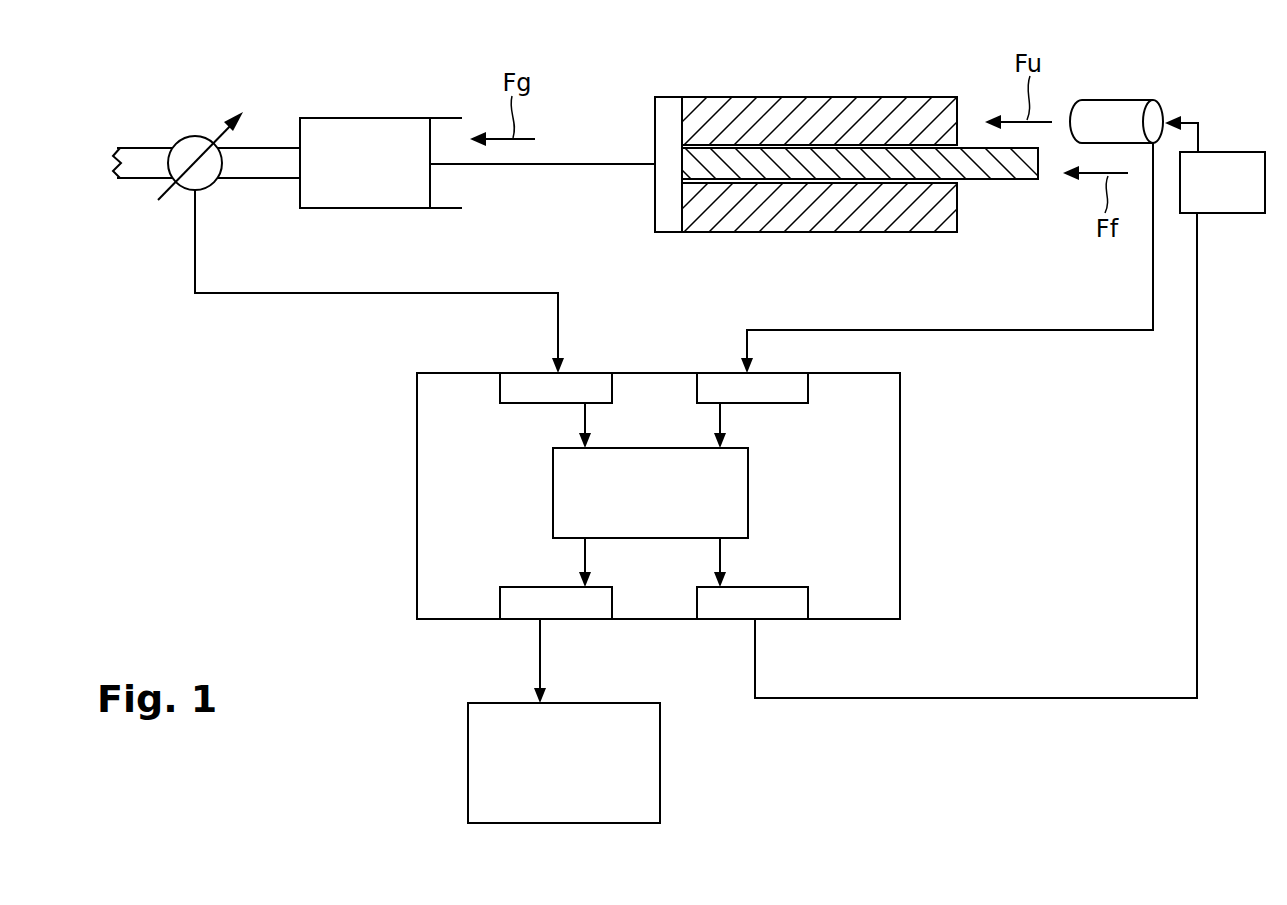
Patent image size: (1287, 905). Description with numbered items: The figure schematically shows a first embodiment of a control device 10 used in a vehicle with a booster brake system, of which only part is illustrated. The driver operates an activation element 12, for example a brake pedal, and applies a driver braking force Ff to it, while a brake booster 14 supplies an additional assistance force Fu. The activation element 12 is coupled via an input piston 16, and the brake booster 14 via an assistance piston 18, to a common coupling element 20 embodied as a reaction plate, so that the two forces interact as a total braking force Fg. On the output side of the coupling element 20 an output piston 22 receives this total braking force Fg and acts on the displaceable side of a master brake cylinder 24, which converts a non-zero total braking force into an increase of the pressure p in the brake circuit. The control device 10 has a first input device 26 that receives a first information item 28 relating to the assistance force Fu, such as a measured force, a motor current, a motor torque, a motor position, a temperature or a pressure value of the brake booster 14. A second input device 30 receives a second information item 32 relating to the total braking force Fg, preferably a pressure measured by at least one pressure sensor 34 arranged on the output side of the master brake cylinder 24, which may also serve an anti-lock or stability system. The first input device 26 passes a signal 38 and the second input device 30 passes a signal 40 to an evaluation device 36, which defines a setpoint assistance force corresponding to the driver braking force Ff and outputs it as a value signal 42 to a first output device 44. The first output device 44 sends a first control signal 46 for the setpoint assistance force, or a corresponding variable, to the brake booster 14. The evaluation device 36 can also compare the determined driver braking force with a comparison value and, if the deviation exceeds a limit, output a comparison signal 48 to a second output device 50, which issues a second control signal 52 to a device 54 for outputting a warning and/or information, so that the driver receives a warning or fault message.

The control device 10 is at (900, 517).
The activation element 12 is at (1243, 203).
The brake booster 14 is at (1160, 110).
The input piston 16 is at (1017, 172).
The assistance piston 18 is at (846, 99).
The coupling element 20 is at (665, 205).
The output piston 22 is at (603, 163).
The master brake cylinder 24 is at (357, 130).
The first input device 26 is at (802, 392).
The first information item 28 is at (1007, 332).
The second input device 30 is at (505, 385).
The second information item 32 is at (287, 297).
The pressure sensor 34 is at (182, 147).
The evaluation device 36 is at (737, 493).
The signal 38 is at (725, 417).
The signal 40 is at (582, 418).
The value signal 42 is at (723, 553).
The first output device 44 is at (802, 607).
The first control signal 46 is at (1197, 518).
The comparison signal 48 is at (580, 558).
The second output device 50 is at (593, 610).
The second control signal 52 is at (537, 655).
The device for outputting a warning and/or information 54 is at (643, 770).